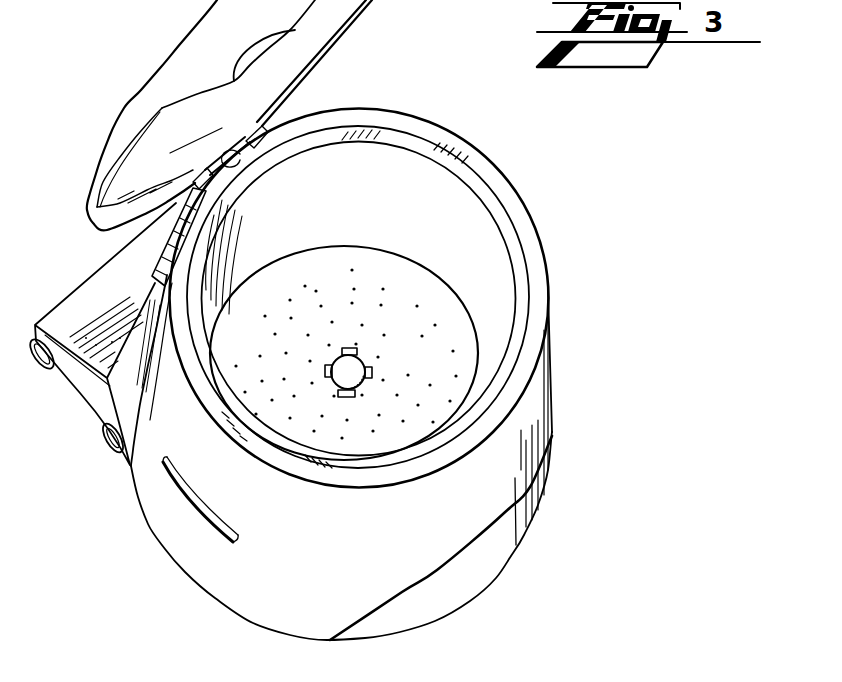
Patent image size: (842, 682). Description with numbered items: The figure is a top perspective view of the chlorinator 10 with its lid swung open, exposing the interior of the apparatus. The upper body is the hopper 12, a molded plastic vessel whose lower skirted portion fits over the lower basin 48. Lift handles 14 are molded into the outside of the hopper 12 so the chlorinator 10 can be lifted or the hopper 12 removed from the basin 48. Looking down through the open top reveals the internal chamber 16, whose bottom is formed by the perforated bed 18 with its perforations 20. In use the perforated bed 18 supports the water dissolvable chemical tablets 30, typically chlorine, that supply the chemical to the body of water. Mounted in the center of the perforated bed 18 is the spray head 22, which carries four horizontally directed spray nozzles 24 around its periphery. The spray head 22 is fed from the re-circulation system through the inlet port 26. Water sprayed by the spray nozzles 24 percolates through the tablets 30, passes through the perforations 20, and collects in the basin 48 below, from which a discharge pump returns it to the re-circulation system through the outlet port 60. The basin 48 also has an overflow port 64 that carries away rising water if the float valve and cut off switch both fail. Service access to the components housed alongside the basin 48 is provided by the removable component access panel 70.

The chlorinator 10 is at (586, 228).
The hopper 12 is at (548, 424).
The lift handles 14 is at (241, 538).
The internal chamber 16 is at (388, 207).
The perforated bed 18 is at (418, 268).
The perforations 20 is at (246, 367).
The spray head 22 is at (351, 364).
The spray nozzles 24 is at (372, 371).
The inlet port 26 is at (34, 324).
The chemical tablets 30 is at (305, 288).
The basin 48 is at (482, 573).
The outlet port 60 is at (117, 452).
The overflow port 64 is at (50, 373).
The component access panel 70 is at (103, 277).